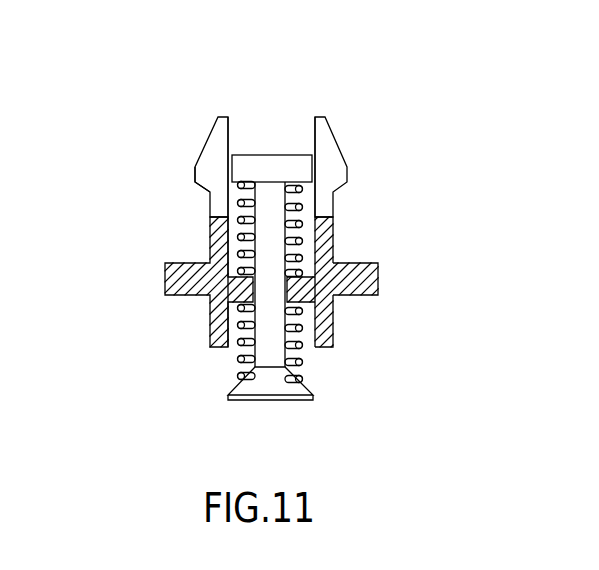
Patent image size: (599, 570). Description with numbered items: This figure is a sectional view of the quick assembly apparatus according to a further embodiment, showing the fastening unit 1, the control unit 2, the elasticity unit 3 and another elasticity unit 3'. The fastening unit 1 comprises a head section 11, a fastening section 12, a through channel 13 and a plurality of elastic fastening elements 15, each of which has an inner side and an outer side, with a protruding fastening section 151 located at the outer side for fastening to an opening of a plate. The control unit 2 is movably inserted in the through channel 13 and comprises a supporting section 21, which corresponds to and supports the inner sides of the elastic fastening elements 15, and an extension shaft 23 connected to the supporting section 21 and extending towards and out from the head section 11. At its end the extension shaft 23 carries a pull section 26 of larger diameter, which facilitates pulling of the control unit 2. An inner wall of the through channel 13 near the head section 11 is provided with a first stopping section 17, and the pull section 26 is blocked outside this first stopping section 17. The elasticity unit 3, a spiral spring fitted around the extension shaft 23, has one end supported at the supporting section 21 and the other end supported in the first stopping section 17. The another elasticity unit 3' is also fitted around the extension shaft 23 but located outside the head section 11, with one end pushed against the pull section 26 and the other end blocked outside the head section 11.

The fastening unit 1 is at (166, 239).
The control unit 2 is at (272, 130).
The elasticity unit 3 is at (213, 229).
The another elasticity unit 3' is at (335, 344).
The head section 11 is at (163, 282).
The fastening section 12 is at (210, 133).
The through channel 13 is at (308, 228).
The elastic fastening elements 15 is at (373, 158).
The first stopping section 17 is at (303, 288).
The supporting section 21 is at (297, 165).
The extension shaft 23 is at (273, 338).
The pull section 26 is at (273, 388).
The protruding fastening section 151 is at (193, 180).